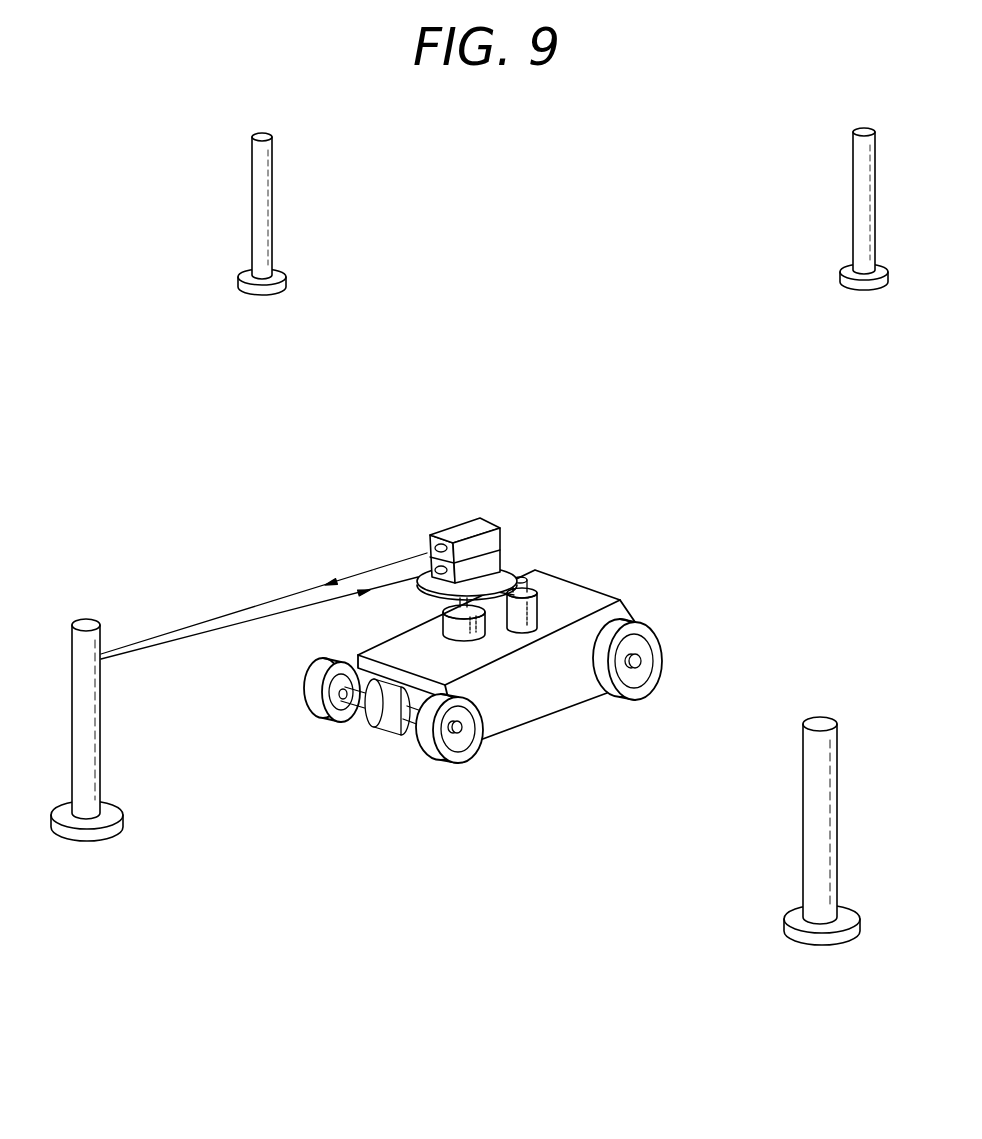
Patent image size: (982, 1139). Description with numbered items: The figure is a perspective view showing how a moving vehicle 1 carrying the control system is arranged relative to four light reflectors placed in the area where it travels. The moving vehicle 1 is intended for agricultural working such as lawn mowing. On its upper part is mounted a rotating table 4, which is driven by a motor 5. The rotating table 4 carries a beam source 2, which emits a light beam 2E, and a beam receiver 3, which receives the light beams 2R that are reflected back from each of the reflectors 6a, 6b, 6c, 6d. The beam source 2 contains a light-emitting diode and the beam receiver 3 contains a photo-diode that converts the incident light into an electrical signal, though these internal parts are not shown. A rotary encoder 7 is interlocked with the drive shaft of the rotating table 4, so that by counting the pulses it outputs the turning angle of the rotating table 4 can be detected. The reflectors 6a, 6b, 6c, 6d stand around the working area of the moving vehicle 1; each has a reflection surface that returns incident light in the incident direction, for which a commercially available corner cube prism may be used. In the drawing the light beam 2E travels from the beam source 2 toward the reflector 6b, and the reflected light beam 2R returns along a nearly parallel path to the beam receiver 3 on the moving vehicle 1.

The moving vehicle 1 is at (548, 707).
The beam source 2 is at (453, 520).
The beam receiver 3 is at (497, 565).
The rotating table 4 is at (520, 577).
The motor 5 is at (538, 607).
The rotary encoder 7 is at (443, 617).
The light beam 2E is at (243, 610).
The reflected light beams 2R is at (237, 628).
The reflector 6a is at (272, 178).
The reflector 6b is at (102, 747).
The reflector 6c is at (803, 780).
The reflector 6d is at (853, 218).